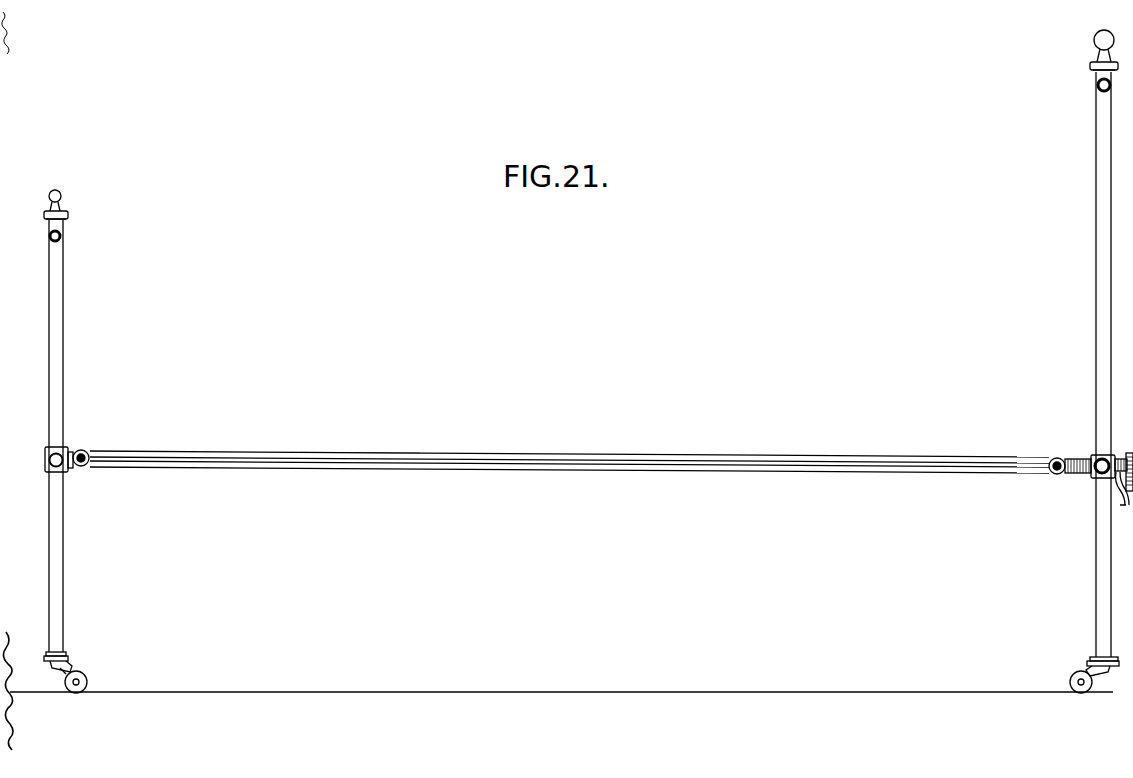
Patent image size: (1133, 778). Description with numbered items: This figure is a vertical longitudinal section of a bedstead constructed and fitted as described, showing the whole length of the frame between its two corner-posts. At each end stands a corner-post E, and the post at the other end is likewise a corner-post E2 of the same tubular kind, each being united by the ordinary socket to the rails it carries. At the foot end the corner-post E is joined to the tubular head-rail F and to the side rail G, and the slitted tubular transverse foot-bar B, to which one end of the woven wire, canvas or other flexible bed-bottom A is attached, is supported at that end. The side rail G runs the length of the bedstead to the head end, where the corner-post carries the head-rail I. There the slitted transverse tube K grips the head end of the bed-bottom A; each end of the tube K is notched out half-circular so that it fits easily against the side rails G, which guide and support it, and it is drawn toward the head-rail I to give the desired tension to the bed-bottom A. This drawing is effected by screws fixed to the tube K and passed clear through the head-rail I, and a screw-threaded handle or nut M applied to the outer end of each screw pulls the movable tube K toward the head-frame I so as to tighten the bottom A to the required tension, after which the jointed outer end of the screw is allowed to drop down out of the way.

The corner-post E is at (65, 441).
The bed post (second) E2 is at (1104, 398).
The tubular head-rail F is at (46, 461).
The transverse foot-bar B is at (87, 452).
The side rail G is at (569, 450).
The bed-bottom A is at (583, 457).
The slitted transverse tube K is at (1058, 458).
The head-rail I is at (1093, 471).
The screw-threaded handle or nut M is at (1116, 462).